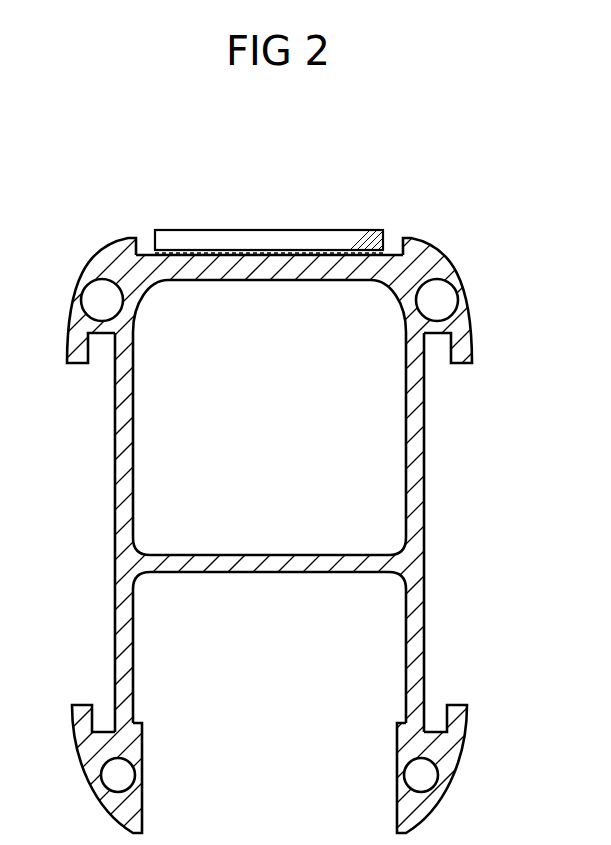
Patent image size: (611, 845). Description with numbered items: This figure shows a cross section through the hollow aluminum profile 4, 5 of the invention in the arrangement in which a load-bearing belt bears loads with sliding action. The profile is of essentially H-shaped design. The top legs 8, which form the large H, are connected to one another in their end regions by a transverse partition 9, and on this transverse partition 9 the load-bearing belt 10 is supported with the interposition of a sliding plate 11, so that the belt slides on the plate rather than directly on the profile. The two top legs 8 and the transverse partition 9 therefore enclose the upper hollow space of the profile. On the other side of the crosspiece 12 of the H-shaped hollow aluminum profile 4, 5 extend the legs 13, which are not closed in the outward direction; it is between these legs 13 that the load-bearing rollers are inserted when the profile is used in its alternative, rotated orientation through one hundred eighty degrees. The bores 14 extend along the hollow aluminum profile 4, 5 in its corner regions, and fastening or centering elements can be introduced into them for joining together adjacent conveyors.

The hollow aluminum profile 4 is at (305, 422).
The hollow aluminum profile 5 is at (305, 422).
The top legs 8 is at (128, 443).
The transverse partition 9 is at (257, 272).
The load-bearing belt 10 is at (218, 232).
The sliding plate 11 is at (337, 232).
The crosspiece 12 is at (258, 563).
The legs 13 is at (118, 651).
The bores 14 is at (93, 297).